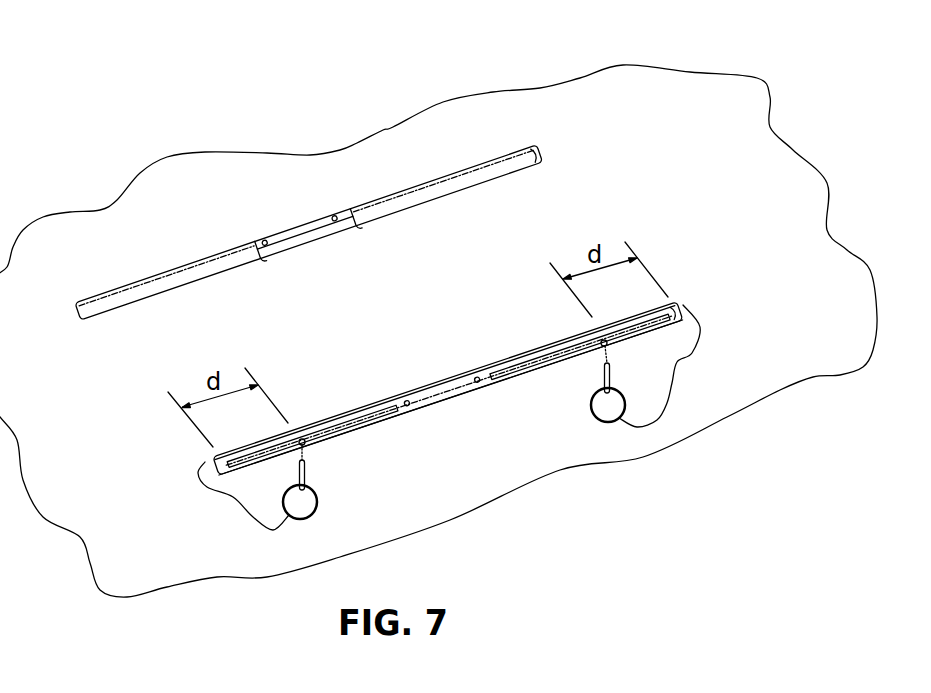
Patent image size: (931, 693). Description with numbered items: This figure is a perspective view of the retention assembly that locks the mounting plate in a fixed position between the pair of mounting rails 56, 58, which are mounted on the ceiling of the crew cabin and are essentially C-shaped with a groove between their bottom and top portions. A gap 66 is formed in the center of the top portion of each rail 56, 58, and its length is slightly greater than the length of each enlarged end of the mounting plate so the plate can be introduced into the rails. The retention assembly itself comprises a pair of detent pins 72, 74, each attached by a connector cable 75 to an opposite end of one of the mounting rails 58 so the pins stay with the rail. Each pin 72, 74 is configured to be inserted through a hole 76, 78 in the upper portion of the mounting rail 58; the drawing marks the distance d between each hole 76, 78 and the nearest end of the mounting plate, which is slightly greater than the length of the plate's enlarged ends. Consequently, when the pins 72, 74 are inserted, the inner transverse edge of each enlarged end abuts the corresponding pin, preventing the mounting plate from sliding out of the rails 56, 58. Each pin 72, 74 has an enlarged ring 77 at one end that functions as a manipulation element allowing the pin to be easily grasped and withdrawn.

The mounting rail 56 is at (193, 251).
The mounting rail 58 is at (560, 329).
The gap 66 is at (428, 405).
The detent pin 72 is at (602, 388).
The detent pin 74 is at (305, 478).
The connector cable 75 is at (683, 358).
The hole 76 is at (602, 348).
The enlarged ring 77 is at (593, 414).
The hole 78 is at (307, 444).